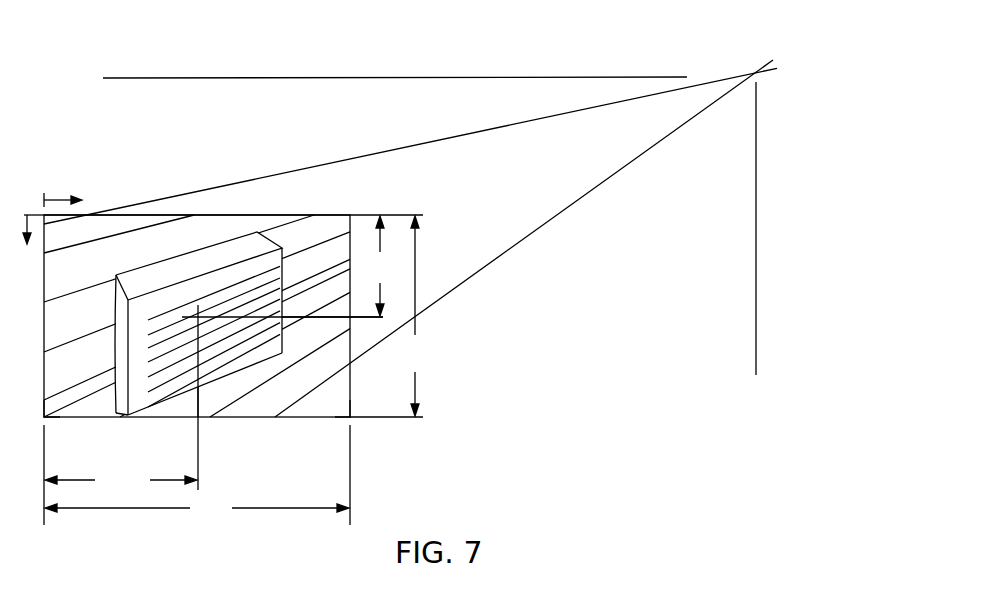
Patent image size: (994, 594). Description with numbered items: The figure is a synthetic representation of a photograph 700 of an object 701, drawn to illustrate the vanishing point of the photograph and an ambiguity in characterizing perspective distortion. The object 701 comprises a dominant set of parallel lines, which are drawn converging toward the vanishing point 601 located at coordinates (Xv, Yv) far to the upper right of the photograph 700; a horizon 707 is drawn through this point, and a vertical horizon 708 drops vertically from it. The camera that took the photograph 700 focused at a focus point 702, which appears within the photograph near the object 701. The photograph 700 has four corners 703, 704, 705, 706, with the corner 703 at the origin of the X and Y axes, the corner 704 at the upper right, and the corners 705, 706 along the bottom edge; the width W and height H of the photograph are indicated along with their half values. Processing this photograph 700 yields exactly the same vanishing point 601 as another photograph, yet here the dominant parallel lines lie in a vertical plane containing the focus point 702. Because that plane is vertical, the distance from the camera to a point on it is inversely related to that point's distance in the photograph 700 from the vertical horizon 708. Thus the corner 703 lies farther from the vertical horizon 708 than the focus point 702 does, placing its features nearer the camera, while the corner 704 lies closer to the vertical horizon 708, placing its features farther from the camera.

The photograph 700 is at (327, 422).
The object 701 is at (133, 288).
The focus point 702 is at (197, 316).
The corner 703 is at (72, 172).
The corner 704 is at (349, 214).
The corner 705 is at (48, 420).
The corner 706 is at (352, 418).
The horizon 707 is at (158, 76).
The vertical horizon 708 is at (757, 282).
The vanishing point 601 is at (744, 59).